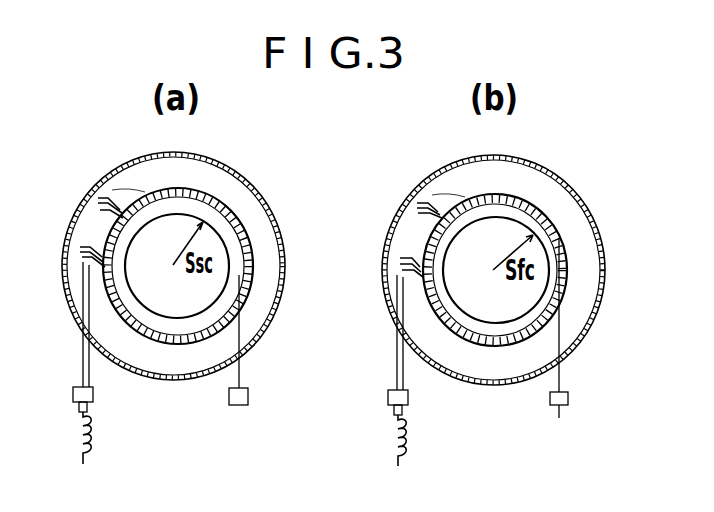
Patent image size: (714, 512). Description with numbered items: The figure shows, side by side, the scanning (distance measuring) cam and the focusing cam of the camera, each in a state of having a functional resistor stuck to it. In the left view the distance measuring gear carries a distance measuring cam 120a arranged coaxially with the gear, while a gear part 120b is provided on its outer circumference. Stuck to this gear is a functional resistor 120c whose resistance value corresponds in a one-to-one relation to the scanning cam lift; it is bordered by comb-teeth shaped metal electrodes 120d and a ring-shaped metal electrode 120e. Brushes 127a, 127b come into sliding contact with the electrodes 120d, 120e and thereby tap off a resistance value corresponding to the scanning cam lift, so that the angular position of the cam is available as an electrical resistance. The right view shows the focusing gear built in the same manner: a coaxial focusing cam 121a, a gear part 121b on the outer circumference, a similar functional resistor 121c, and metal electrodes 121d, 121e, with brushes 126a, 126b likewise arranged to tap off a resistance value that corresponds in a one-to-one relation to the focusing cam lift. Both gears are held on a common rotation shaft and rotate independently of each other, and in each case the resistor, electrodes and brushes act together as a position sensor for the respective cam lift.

The distance measuring cam 120a is at (223, 277).
The gear part 120b is at (222, 163).
The functional resistor 120c is at (227, 217).
The comb-teeth shaped metal electrodes 120d is at (113, 192).
The ring-shaped metal electrode 120e is at (148, 192).
The brush 127a is at (93, 395).
The brush 127b is at (227, 398).
The focusing cam 121a is at (557, 238).
The gear part 121b is at (503, 156).
The functional resistor 121c is at (568, 267).
The metal electrodes 121d is at (422, 207).
The metal electrode 121e is at (468, 200).
The brush 126a is at (408, 395).
The brush 126b is at (568, 398).